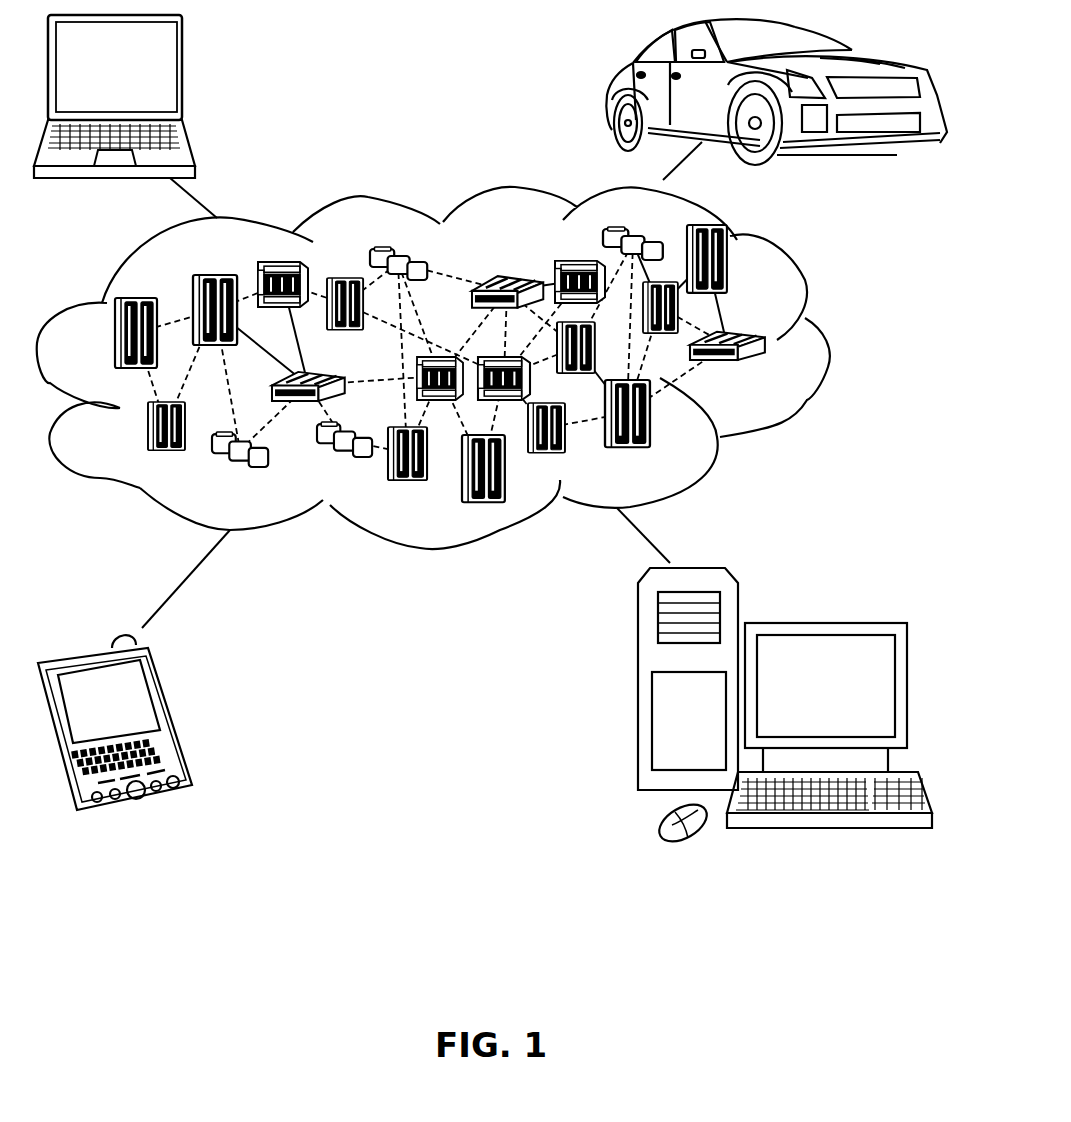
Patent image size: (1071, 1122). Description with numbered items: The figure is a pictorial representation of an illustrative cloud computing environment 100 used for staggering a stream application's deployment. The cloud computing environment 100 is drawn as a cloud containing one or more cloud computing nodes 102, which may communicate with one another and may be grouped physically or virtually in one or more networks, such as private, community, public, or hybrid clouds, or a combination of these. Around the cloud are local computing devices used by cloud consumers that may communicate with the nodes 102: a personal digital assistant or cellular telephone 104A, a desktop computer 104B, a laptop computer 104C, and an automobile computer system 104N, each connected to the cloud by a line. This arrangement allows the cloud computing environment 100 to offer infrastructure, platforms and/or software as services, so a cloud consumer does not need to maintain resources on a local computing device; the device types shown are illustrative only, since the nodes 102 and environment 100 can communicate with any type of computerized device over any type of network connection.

The cloud computing environment 100 is at (827, 343).
The cloud computing nodes 102 is at (766, 371).
The personal digital assistant (PDA) or cellular telephone 104A is at (173, 717).
The desktop computer 104B is at (822, 623).
The laptop computer 104C is at (183, 77).
The automobile computer system 104N is at (610, 92).